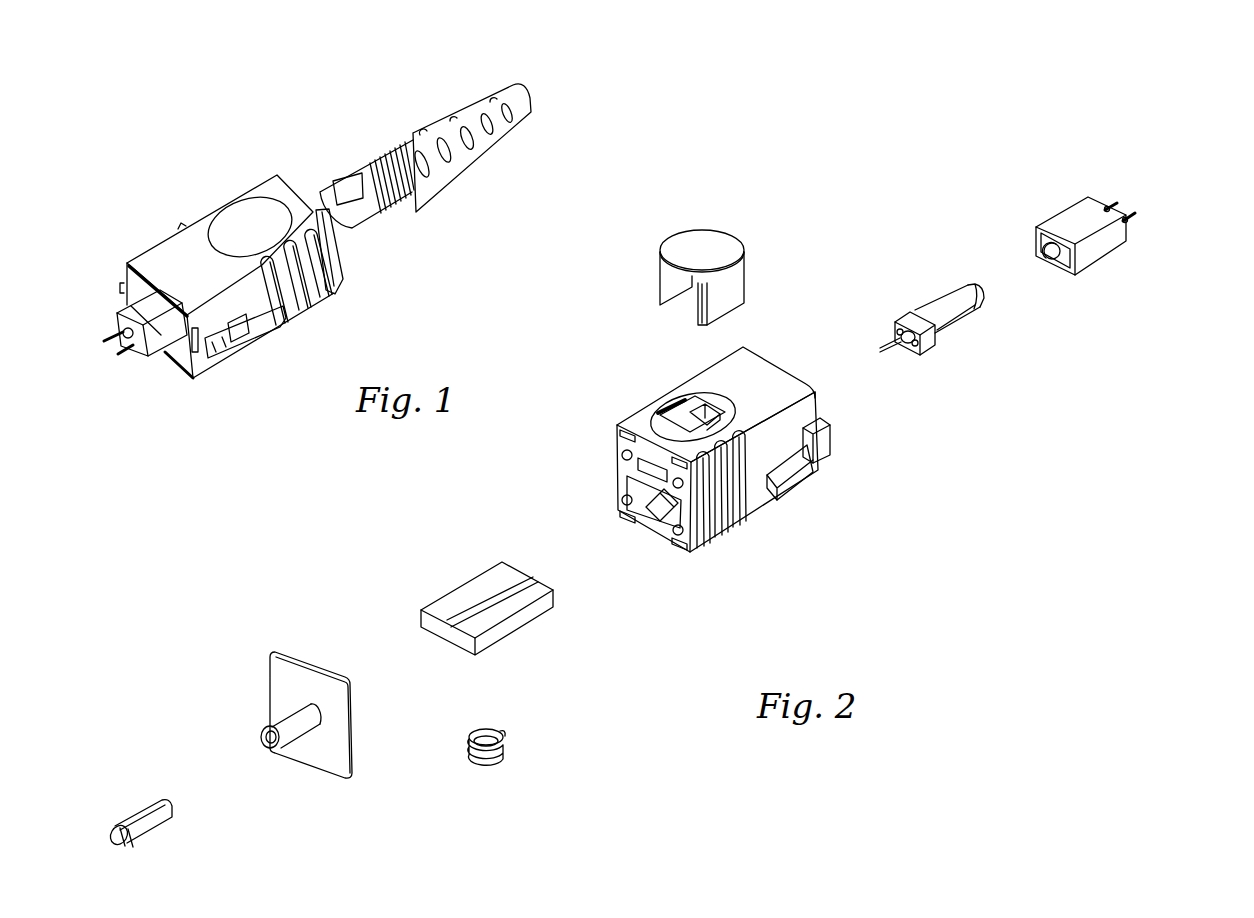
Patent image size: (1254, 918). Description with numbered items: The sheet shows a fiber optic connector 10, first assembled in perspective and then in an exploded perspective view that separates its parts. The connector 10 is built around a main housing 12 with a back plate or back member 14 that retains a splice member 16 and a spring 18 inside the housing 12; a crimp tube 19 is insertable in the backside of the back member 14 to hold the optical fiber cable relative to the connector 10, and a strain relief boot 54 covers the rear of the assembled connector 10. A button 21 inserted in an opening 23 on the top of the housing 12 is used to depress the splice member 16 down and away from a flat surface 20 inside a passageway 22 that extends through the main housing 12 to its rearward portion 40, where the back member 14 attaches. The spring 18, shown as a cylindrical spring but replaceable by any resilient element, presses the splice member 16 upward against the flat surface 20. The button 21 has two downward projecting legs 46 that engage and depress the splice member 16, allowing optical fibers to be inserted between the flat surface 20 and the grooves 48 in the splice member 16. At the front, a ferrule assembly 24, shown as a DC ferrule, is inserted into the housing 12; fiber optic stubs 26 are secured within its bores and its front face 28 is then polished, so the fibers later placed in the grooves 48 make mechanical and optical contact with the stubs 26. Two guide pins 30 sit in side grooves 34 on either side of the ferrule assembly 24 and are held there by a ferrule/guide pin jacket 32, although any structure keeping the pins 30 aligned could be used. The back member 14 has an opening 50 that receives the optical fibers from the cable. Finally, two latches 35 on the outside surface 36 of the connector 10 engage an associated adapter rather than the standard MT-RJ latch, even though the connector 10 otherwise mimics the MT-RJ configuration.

In FIG. 1, the fiber optic connector 10 is at (79, 163).
In FIG. 2, the fiber optic connector 10 is at (148, 872).
In FIG. 1, the main housing 12 is at (318, 300).
In FIG. 2, the main housing 12 is at (773, 372).
In FIG. 1, the back member 14 is at (338, 281).
In FIG. 2, the back member 14 is at (357, 750).
In FIG. 2, the splice member 16 is at (520, 628).
In FIG. 2, the spring 18 is at (513, 750).
In FIG. 2, the crimp tube 19 is at (133, 817).
In FIG. 2, the flat surface 20 is at (650, 497).
In FIG. 1, the button 21 is at (232, 218).
In FIG. 2, the button 21 is at (738, 233).
In FIG. 2, the passageway 22 is at (660, 514).
In FIG. 2, the opening 23 is at (692, 400).
In FIG. 1, the ferrule assembly 24 is at (107, 340).
In FIG. 2, the ferrule assembly 24 is at (955, 325).
In FIG. 2, the fiber optic stubs 26 is at (890, 350).
In FIG. 2, the front face 28 is at (977, 290).
In FIG. 1, the guide pins 30 is at (124, 359).
In FIG. 2, the guide pins 30 is at (1133, 217).
In FIG. 1, the ferrule/guide pin jacket 32 is at (152, 363).
In FIG. 2, the ferrule/guide pin jacket 32 is at (1093, 267).
In FIG. 2, the side grooves 34 is at (980, 292).
In FIG. 1, the latches 35 is at (262, 333).
In FIG. 2, the latches 35 is at (800, 467).
In FIG. 1, the outside surface 36 is at (160, 256).
In FIG. 2, the outside surface 36 is at (810, 410).
In FIG. 2, the rearward portion 40 is at (618, 446).
In FIG. 2, the downward projecting legs 46 is at (667, 292).
In FIG. 2, the grooves 48 is at (490, 597).
In FIG. 2, the opening 50 is at (262, 737).
In FIG. 1, the strain relief boot 54 is at (437, 172).